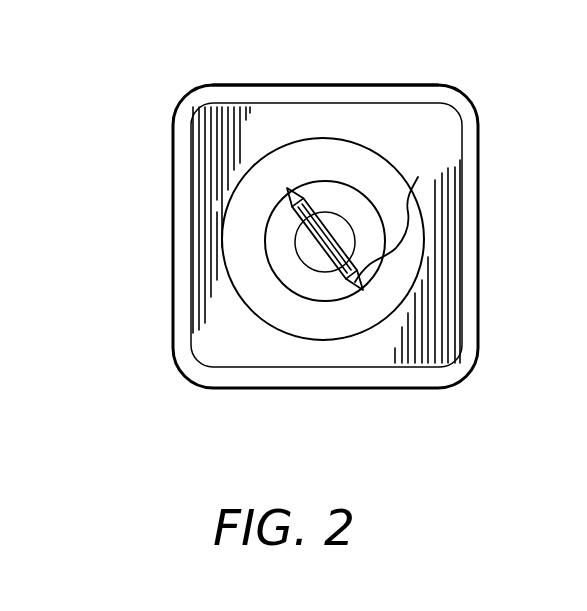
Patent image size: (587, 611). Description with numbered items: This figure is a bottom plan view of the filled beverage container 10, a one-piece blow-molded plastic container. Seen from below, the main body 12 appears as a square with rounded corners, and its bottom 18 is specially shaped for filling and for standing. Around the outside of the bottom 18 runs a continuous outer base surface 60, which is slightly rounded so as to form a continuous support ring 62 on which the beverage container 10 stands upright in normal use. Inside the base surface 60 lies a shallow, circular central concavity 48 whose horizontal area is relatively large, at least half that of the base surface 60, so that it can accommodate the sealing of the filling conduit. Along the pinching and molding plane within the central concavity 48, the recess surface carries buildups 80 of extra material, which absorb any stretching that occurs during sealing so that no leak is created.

The beverage container 10 is at (140, 200).
The main body 12 is at (355, 85).
The bottom 18 is at (152, 320).
The central concavity 48 is at (318, 333).
The outer base surface 60 is at (428, 120).
The support ring 62 is at (290, 116).
The buildups 80 is at (303, 190).